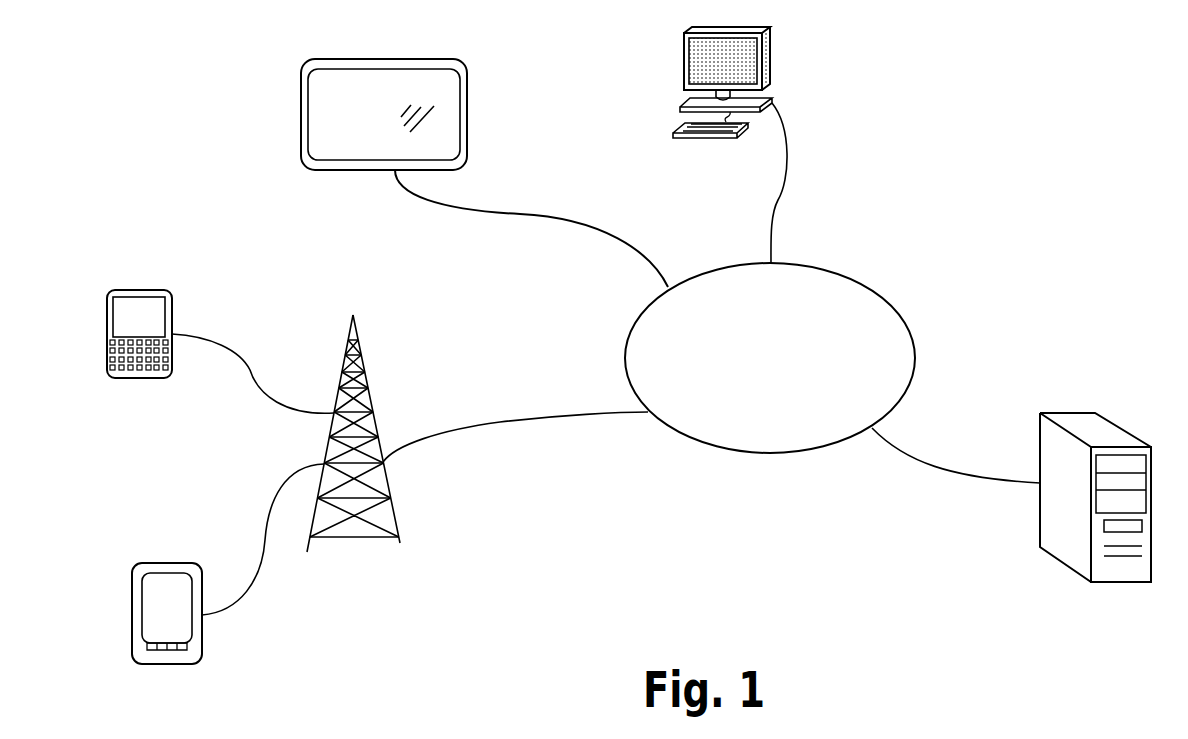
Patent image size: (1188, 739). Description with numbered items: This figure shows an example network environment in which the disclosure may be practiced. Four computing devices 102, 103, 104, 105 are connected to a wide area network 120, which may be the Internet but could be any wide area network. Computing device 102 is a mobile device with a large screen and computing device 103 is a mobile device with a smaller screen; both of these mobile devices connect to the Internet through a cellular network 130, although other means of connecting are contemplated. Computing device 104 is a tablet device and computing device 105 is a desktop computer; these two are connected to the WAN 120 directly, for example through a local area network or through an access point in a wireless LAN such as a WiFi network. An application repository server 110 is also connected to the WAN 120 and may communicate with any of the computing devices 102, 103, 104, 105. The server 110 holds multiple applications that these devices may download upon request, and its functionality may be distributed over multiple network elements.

The computing device 102 is at (132, 625).
The computing device 103 is at (107, 334).
The computing device 104 is at (301, 105).
The computing device 105 is at (684, 62).
The application repository server 110 is at (1091, 578).
The wide area network (WAN) 120 is at (877, 282).
The cellular network 130 is at (400, 543).